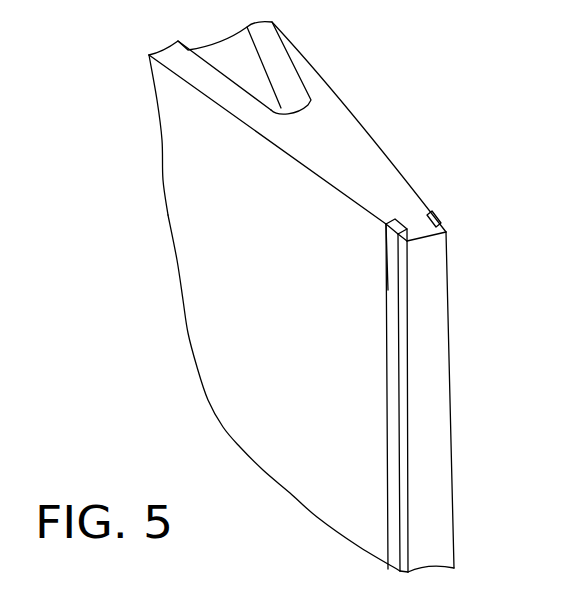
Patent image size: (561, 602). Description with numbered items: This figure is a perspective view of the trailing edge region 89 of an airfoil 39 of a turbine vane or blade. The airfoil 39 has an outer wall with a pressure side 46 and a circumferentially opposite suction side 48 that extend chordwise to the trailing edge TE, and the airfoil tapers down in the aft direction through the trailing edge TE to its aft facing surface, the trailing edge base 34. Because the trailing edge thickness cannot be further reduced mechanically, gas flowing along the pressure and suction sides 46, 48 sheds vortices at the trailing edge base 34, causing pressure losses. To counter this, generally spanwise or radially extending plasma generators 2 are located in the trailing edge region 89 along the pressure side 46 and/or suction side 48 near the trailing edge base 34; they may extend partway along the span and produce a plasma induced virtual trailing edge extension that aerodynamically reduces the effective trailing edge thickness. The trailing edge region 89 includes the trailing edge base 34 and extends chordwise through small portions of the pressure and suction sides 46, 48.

The suction side 48 is at (377, 143).
The trailing edge TE is at (415, 222).
The plasma generators 2 is at (437, 220).
The trailing edge base 34 is at (443, 300).
The airfoil 39 is at (197, 208).
The pressure side 46 is at (228, 385).
The trailing edge region 89 is at (375, 402).